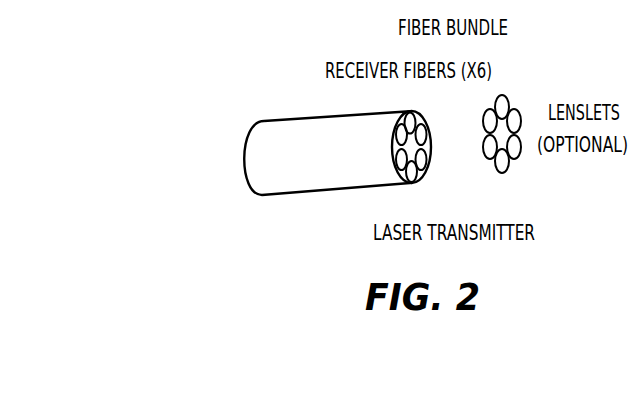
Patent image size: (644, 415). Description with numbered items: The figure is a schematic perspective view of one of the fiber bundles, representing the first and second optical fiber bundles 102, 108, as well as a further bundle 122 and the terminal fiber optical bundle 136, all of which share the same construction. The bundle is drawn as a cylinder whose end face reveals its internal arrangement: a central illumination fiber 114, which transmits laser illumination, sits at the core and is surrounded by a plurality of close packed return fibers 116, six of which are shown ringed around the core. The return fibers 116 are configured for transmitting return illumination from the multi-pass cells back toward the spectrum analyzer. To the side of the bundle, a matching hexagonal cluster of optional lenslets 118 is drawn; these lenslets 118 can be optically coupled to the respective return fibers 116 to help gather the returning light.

The first optical fiber bundle 102 is at (268, 108).
The second optical fiber bundle 108 is at (348, 125).
The fiber bundle 122 is at (362, 125).
The terminal fiber optical bundle 136 is at (362, 125).
The central illumination fiber 114 is at (423, 152).
The return fibers 116 is at (463, 100).
The lenslets 118 is at (474, 172).